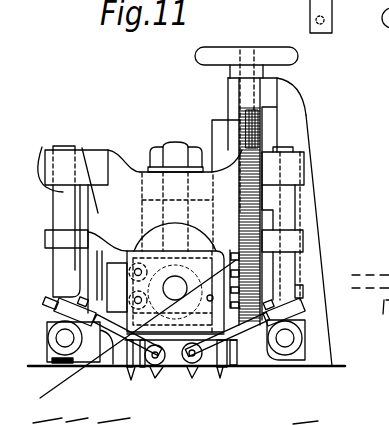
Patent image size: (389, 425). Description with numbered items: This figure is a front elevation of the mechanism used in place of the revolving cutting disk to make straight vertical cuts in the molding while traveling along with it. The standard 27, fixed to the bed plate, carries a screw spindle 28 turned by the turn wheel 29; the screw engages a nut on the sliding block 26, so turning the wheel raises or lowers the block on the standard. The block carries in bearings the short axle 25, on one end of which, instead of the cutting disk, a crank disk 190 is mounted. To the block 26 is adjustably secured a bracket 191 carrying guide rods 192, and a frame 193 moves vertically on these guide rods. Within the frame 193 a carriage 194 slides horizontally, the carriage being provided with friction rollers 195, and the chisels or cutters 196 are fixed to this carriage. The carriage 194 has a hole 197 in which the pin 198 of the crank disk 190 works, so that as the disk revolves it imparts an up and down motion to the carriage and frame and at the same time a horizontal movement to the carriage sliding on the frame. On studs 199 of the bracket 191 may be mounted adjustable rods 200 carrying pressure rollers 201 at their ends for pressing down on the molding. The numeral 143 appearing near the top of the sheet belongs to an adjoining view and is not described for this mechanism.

The axle 25 is at (142, 212).
The sliding block 26 is at (222, 143).
The standard 27 is at (293, 103).
The screw spindle 28 is at (258, 128).
The turn wheel 29 is at (218, 53).
The adjacent figure element 143 is at (311, 18).
The crank disk 190 is at (140, 220).
The bracket 191 is at (82, 148).
The guide rods 192 is at (42, 147).
The frame 193 is at (92, 260).
The carriage 194 is at (92, 283).
The friction rollers 195 is at (75, 360).
The chisels or cutters 196 is at (170, 368).
The hole 197 is at (258, 250).
The pin 198 is at (131, 335).
The studs 199 is at (80, 350).
The adjustable rods 200 is at (140, 368).
The pressure rollers 201 is at (153, 368).